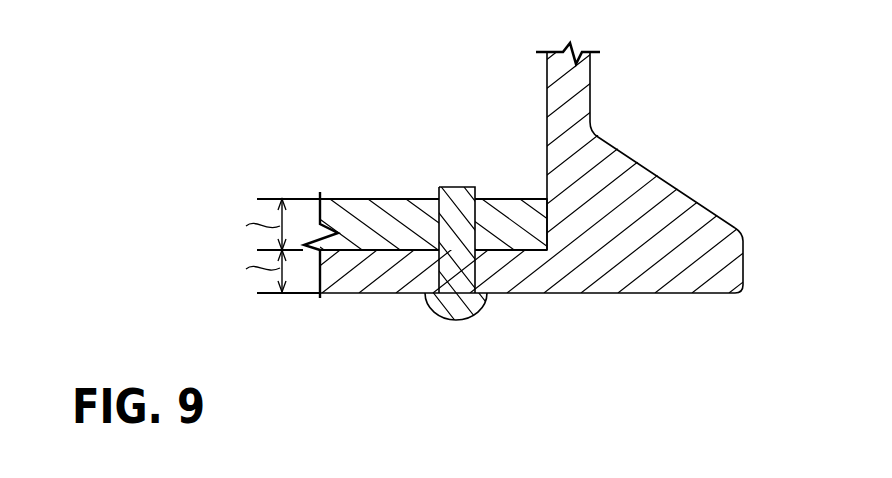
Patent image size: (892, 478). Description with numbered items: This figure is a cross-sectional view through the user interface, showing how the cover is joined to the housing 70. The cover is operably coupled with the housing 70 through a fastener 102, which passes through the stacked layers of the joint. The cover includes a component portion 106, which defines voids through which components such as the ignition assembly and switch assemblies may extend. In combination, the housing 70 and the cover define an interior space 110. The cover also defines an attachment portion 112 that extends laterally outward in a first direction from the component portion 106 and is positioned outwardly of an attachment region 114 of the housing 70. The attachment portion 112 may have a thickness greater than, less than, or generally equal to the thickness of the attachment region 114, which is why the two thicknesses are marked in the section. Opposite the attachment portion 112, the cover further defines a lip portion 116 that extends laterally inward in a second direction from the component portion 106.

The housing 70 is at (504, 222).
The fastener 102 is at (446, 318).
The component portion 106 is at (590, 78).
The interior space 110 is at (424, 137).
The attachment portion 112 is at (378, 290).
The attachment region 114 is at (385, 199).
The lip portion 116 is at (744, 258).